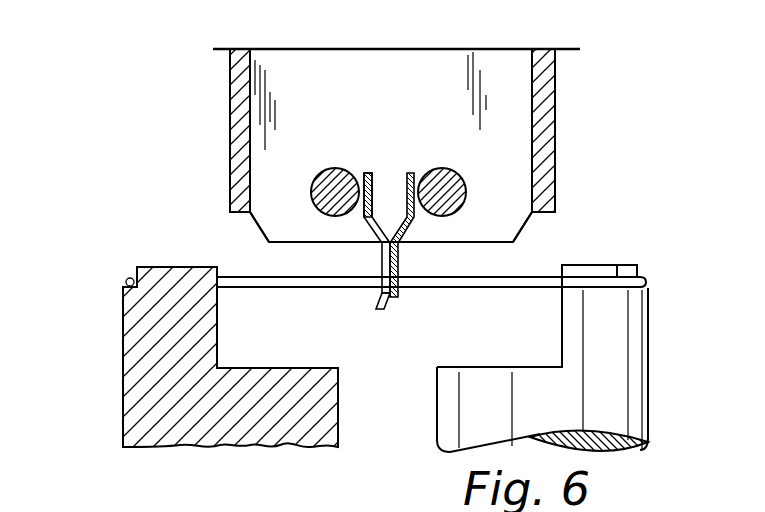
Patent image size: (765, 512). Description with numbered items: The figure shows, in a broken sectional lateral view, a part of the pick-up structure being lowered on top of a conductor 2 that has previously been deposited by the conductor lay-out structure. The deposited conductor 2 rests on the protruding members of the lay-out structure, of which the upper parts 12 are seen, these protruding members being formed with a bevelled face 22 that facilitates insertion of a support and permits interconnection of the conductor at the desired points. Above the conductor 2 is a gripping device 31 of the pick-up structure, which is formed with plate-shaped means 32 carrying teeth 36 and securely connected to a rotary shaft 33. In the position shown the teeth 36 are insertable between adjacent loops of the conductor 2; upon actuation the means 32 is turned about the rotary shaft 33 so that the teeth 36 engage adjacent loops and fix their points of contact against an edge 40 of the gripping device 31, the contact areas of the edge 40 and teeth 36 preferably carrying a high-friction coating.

The conductor 2 is at (645, 282).
The upper part 12 is at (130, 340).
The bevelled face 22 is at (445, 366).
The gripping device 31 is at (556, 107).
The means 32 is at (403, 217).
The rotary shaft 33 is at (337, 168).
The teeth 36 is at (388, 299).
The edge 40 is at (248, 212).